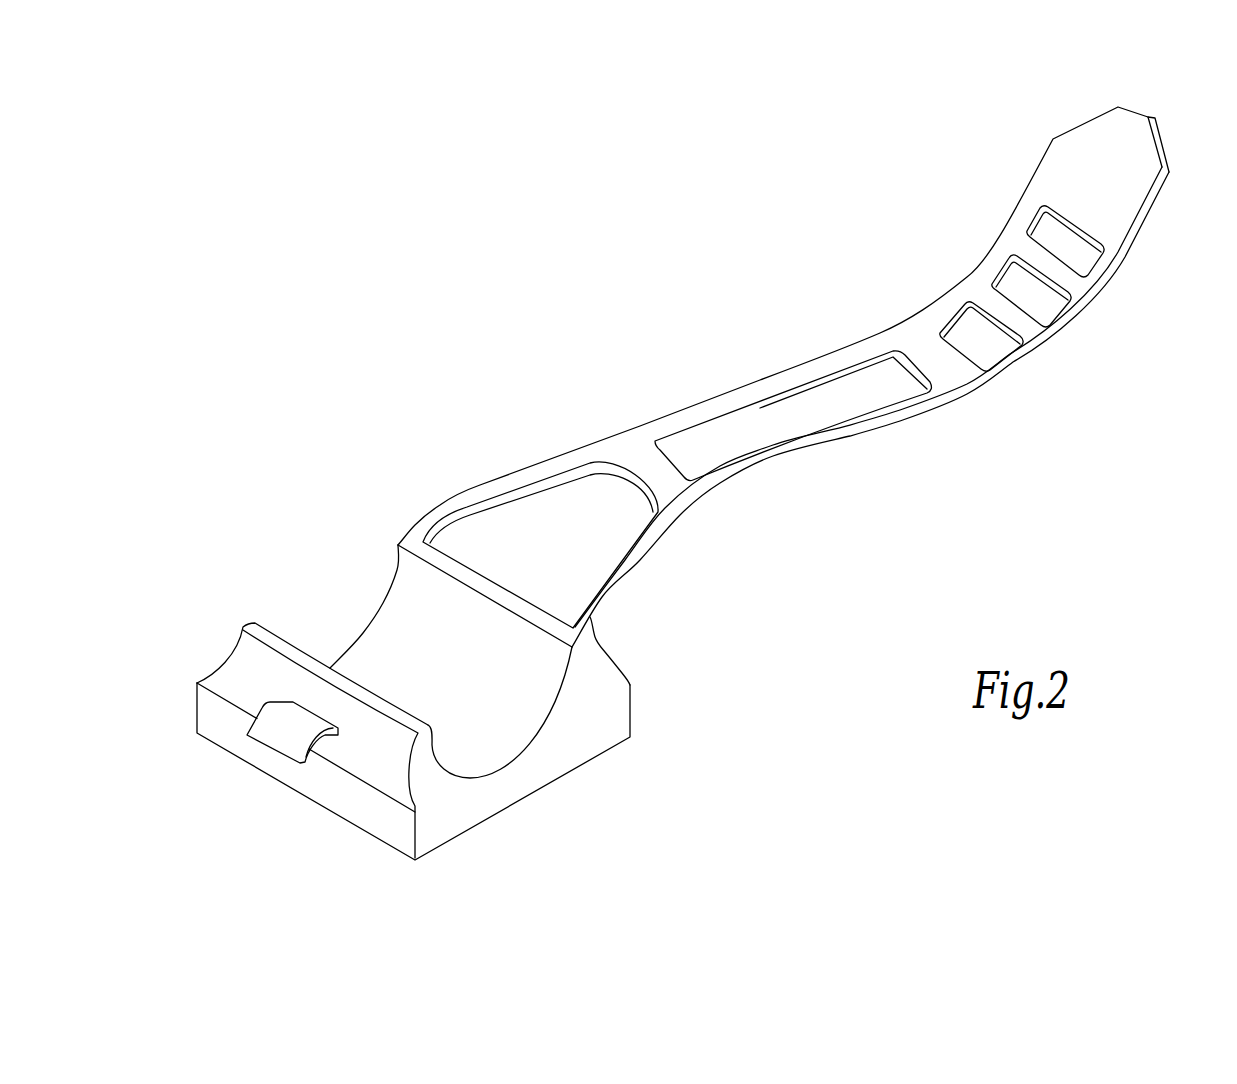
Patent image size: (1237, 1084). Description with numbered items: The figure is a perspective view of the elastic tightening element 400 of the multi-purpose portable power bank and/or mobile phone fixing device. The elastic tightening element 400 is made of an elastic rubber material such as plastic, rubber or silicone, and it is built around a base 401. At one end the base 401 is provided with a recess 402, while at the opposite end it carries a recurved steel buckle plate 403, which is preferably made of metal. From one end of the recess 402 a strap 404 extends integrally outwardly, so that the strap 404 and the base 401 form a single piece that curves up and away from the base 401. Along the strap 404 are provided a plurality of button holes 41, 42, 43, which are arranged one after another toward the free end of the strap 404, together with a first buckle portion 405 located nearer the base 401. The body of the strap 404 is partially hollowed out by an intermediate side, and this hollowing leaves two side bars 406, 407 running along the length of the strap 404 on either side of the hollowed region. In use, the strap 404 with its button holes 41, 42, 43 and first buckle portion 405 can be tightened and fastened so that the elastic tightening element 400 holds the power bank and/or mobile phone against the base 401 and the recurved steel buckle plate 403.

The elastic tightening element 400 is at (507, 315).
The base 401 is at (555, 748).
The recess 402 is at (397, 612).
The recurved steel buckle plate 403 is at (275, 737).
The strap 404 is at (805, 365).
The first buckle portion 405 is at (627, 483).
The side bar 406 is at (718, 405).
The side bar 407 is at (778, 442).
The button hole 41 is at (983, 345).
The button hole 42 is at (1040, 307).
The button hole 43 is at (1085, 260).